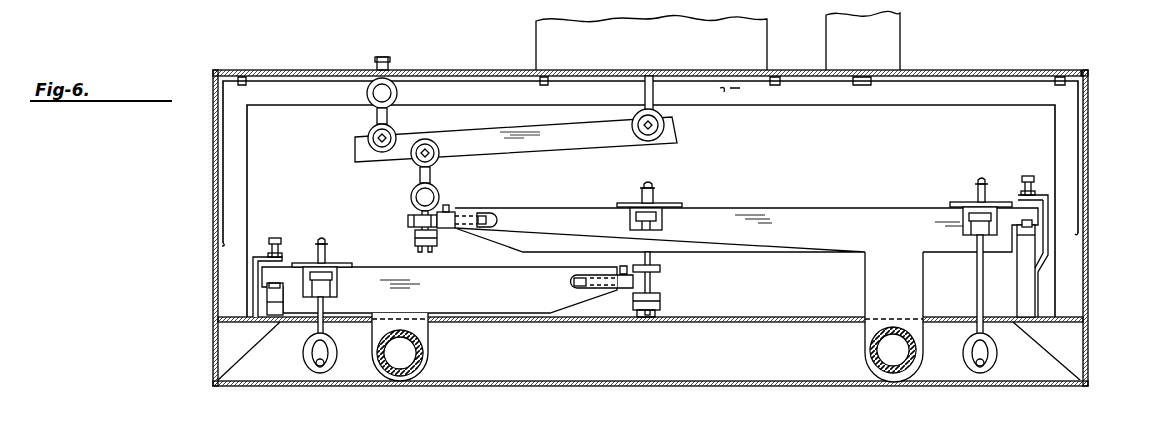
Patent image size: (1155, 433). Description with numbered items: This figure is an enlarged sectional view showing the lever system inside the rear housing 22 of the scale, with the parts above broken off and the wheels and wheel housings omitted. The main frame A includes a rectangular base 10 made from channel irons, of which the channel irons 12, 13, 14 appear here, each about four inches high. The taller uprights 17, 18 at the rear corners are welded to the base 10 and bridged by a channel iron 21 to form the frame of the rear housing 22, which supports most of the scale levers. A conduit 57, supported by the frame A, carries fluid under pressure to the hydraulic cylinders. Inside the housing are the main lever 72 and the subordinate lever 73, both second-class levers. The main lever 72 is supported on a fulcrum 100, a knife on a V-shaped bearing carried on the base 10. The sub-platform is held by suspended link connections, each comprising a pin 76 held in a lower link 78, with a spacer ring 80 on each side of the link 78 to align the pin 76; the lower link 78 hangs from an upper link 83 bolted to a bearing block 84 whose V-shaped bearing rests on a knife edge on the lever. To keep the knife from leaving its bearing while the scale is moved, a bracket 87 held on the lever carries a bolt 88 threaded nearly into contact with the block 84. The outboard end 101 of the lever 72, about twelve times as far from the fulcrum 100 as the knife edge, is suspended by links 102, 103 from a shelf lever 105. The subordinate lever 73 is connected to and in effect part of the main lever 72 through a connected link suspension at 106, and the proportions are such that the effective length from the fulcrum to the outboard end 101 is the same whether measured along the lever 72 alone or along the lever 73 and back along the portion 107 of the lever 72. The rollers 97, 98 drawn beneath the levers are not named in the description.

The rectangular base 10 is at (648, 222).
The channel iron 12 is at (1088, 345).
The channel iron 13 is at (767, 386).
The channel iron 14 is at (213, 345).
The upright 17 is at (1080, 204).
The upright 18 is at (221, 243).
The channel iron 21 is at (500, 70).
The rear housing 22 is at (1108, 52).
The conduit 57 is at (722, 88).
The main lever 72 is at (856, 233).
The subordinate lever 73 is at (500, 296).
The pin 76 is at (318, 366).
The lower link 78 is at (303, 348).
The spacer ring 80 is at (316, 363).
The upper link 83 is at (325, 304).
The bearing block 84 is at (330, 262).
The bracket 87 is at (258, 257).
The bolt 88 is at (278, 240).
The roller 97 is at (870, 353).
The roller 98 is at (425, 355).
The fulcrum 100 is at (1035, 240).
The outboard end 101 is at (460, 210).
The link 102 is at (408, 224).
The link 103 is at (412, 184).
The shelf lever 105 is at (509, 142).
The link suspension 106 is at (660, 272).
The portion of the lever 107 is at (565, 210).
The main frame A is at (213, 161).